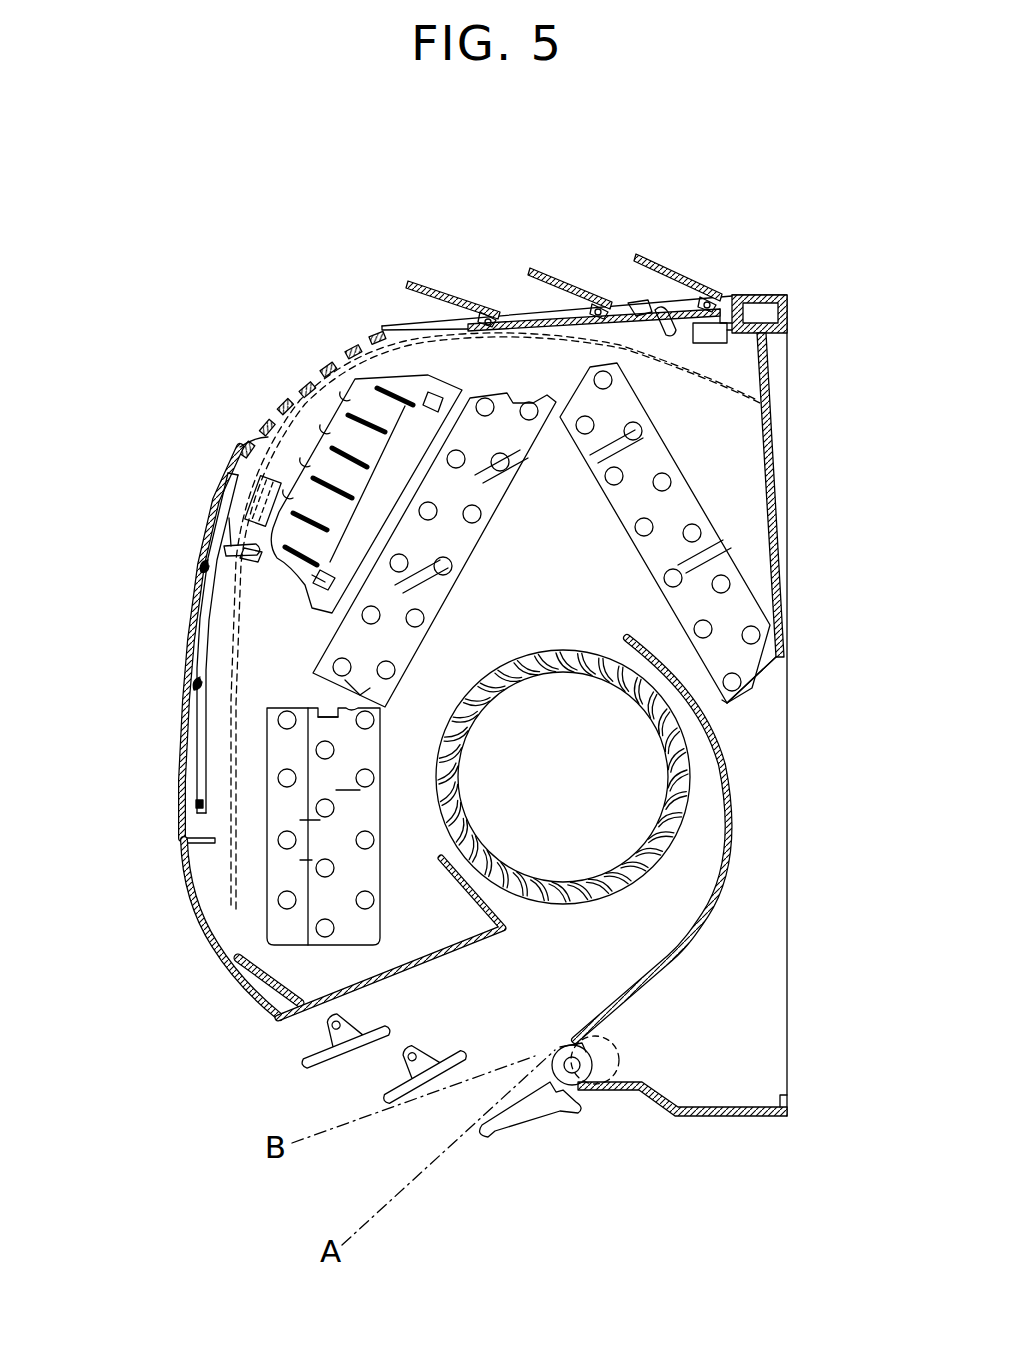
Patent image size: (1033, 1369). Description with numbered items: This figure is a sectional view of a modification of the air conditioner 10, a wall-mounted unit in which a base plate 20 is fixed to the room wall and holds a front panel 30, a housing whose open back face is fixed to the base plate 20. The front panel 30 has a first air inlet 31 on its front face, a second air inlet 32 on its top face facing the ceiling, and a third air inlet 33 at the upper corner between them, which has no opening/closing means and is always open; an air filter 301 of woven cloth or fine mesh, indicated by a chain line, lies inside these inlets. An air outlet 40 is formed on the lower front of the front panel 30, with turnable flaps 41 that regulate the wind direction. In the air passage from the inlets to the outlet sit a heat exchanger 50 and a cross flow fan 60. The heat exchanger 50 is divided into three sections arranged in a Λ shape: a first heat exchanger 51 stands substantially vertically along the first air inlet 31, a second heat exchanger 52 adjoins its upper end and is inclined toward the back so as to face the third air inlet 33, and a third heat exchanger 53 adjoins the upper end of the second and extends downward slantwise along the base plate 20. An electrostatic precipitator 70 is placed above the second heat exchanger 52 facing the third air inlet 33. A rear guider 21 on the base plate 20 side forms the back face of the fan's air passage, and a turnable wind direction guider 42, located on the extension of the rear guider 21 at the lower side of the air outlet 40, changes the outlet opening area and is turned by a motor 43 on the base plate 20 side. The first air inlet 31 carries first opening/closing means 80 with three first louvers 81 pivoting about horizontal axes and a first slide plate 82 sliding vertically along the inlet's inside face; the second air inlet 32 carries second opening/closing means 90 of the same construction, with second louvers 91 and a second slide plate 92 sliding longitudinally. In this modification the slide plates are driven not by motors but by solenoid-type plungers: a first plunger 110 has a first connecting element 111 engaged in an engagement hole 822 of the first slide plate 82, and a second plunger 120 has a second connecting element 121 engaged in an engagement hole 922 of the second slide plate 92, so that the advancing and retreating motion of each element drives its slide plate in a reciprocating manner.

The air conditioner 10 is at (852, 246).
The base plate 20 is at (775, 437).
The rear guider 21 is at (733, 810).
The front panel 30 is at (230, 987).
The first air inlet 31 is at (168, 622).
The second air inlet 32 is at (497, 296).
The third air inlet 33 is at (268, 388).
The air outlet 40 is at (471, 1031).
The flaps 41 is at (392, 1098).
The wind direction guider 42 is at (535, 1113).
The motor 43 is at (620, 1062).
The heat exchanger 50 is at (563, 654).
The first heat exchanger 51 is at (375, 760).
The second heat exchanger 52 is at (484, 495).
The third heat exchanger 53 is at (738, 612).
The fan 60 is at (552, 700).
The electrostatic precipitator 70 is at (400, 372).
The first opening/closing means 80 is at (168, 674).
The first louvers 81 is at (198, 570).
The first slide plate 82 is at (205, 682).
The second opening/closing means 90 is at (557, 259).
The second louvers 91 is at (430, 283).
The second slide plate 92 is at (533, 322).
The first plunger 110 is at (255, 490).
The first connecting element 111 is at (255, 560).
The second plunger 120 is at (727, 347).
The second connecting element 121 is at (670, 338).
The air filter 301 is at (345, 345).
The engagement hole 822 is at (230, 546).
The engagement hole 922 is at (640, 303).